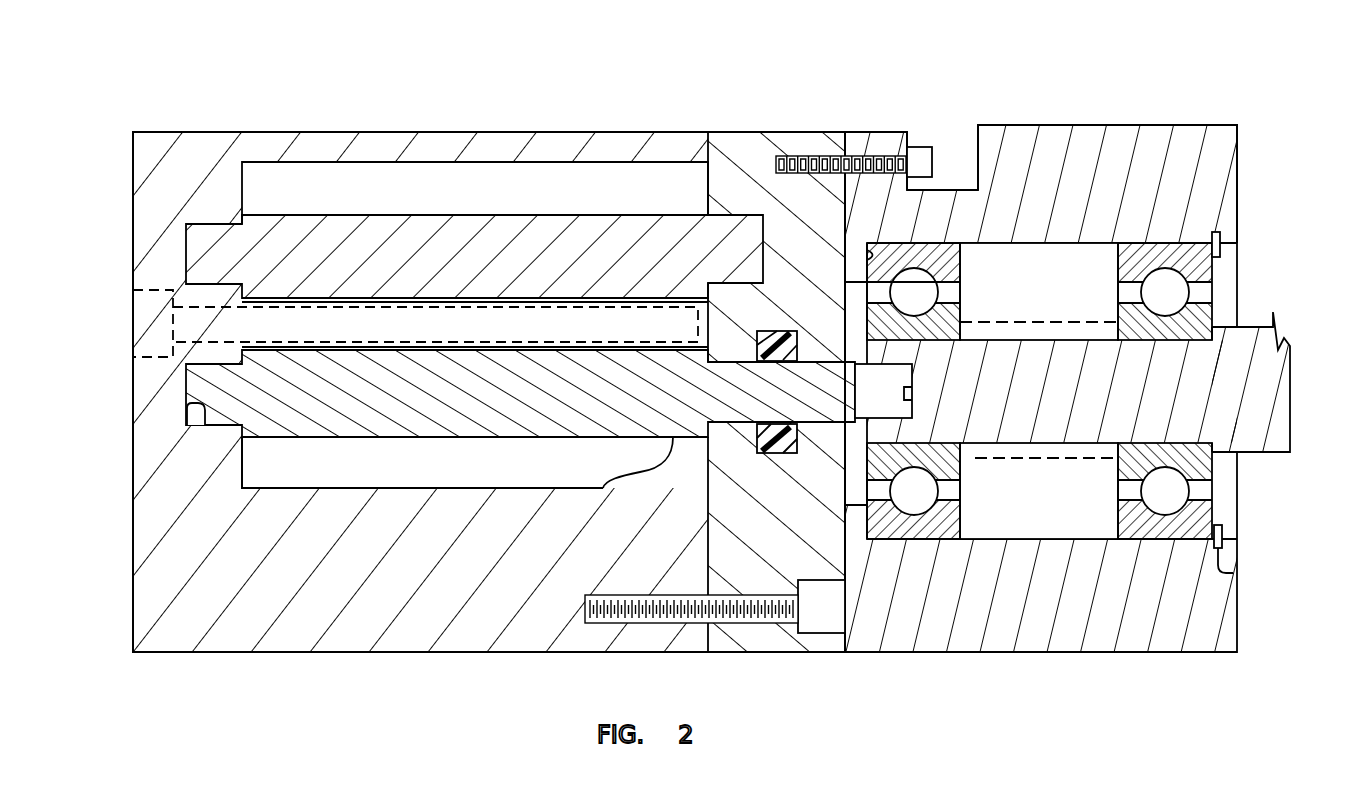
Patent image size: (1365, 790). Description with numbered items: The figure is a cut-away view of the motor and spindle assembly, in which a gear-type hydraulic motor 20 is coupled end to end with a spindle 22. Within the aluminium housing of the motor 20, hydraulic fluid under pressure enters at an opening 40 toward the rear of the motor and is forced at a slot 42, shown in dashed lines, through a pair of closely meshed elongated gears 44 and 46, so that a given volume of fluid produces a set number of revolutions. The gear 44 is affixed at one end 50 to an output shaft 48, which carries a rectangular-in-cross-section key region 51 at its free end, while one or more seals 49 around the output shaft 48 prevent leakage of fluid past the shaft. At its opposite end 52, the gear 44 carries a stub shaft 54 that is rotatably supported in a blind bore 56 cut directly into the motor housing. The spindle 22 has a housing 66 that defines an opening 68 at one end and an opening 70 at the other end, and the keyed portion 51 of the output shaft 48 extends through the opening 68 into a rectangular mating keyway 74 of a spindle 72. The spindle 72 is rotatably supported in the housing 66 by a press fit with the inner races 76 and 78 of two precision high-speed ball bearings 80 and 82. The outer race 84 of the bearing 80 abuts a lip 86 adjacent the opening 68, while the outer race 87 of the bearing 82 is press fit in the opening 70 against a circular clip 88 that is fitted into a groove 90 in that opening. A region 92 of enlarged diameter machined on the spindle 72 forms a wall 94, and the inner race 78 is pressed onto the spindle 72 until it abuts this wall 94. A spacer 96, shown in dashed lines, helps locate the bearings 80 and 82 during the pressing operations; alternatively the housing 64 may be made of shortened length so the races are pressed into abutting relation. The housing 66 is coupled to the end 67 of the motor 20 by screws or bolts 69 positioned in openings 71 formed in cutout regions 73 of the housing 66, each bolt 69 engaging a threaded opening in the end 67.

The motor 20 is at (350, 100).
The spindle 22 is at (968, 73).
The opening 40 is at (170, 290).
The slot 42 is at (441, 300).
The elongated gear 44 is at (240, 468).
The elongated gear 46 is at (287, 193).
The output shaft 48 is at (826, 397).
The seals 49 is at (780, 332).
The end 50 is at (603, 488).
The key region 51 is at (895, 405).
The end 52 is at (242, 478).
The stub shaft 54 is at (197, 408).
The blind bore 56 is at (187, 403).
The housing 64 is at (1263, 175).
The housing 66 is at (1237, 152).
The end 67 is at (748, 133).
The opening 68 is at (855, 483).
The screws or bolts 69 is at (917, 147).
The opening 70 is at (1220, 483).
The openings 71 is at (802, 155).
The spindle 72 is at (1070, 403).
The cutout regions 73 is at (957, 147).
The keyway 74 is at (913, 387).
The inner race 76 is at (962, 318).
The inner race 78 is at (1115, 465).
The ball bearing 80 is at (973, 290).
The ball bearing 82 is at (1222, 292).
The outer race 84 is at (962, 262).
The lip 86 is at (867, 253).
The outer race 87 is at (1210, 270).
The circular clip 88 is at (1223, 530).
The groove 90 is at (1230, 572).
The region of enlarged diameter 92 is at (1248, 460).
The wall 94 is at (1200, 432).
The spacer 96 is at (983, 459).